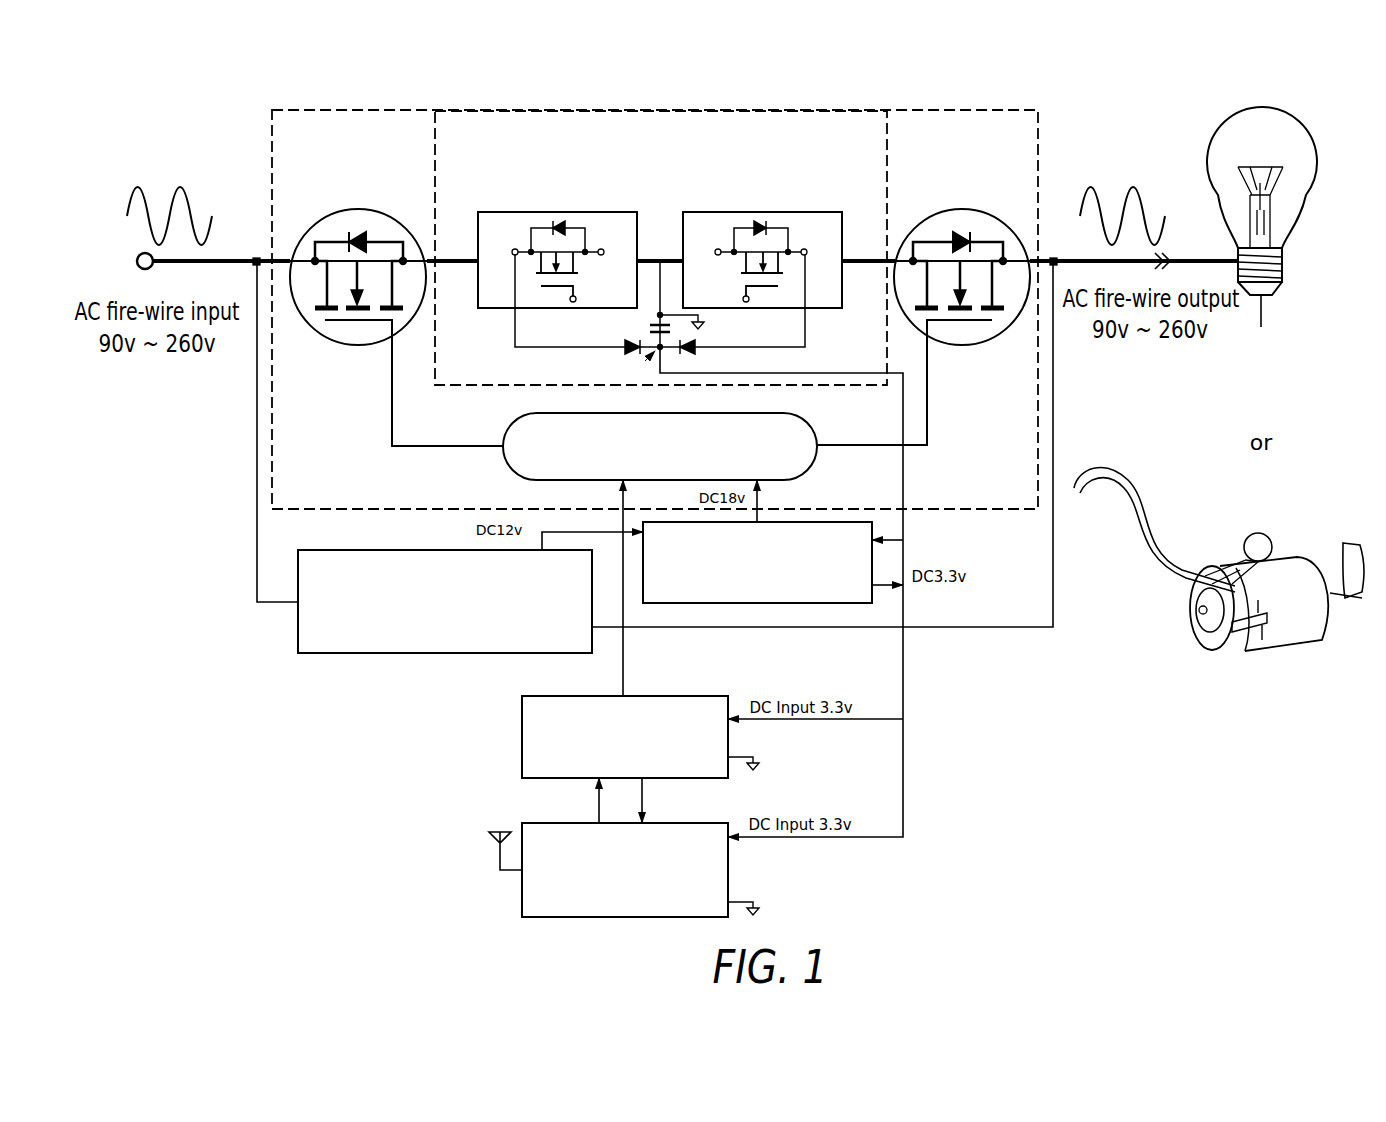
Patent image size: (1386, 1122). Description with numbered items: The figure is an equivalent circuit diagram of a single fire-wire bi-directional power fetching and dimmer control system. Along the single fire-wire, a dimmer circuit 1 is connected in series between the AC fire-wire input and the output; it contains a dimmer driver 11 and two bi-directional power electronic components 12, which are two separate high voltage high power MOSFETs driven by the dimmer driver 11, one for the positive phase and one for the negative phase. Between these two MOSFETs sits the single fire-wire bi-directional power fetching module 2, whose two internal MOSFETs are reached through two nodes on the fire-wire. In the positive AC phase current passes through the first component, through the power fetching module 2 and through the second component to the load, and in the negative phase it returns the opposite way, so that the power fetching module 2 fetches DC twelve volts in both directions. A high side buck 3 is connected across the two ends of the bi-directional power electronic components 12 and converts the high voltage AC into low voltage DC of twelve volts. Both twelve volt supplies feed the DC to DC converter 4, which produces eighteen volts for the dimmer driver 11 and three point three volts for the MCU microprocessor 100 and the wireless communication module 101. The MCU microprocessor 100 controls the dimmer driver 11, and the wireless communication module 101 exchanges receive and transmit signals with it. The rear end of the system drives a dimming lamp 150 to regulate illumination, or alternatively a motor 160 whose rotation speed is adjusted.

The dimmer circuit 1 is at (262, 457).
The single fire-wire bi-directional power fetching module 2 is at (480, 126).
The high side buck 3 is at (399, 654).
The DC to DC converter 4 is at (763, 604).
The dimmer driver 11 is at (799, 463).
The bi-directional power electronic component 12 is at (315, 241).
The MCU microprocessor 100 is at (522, 745).
The wireless communication module 101 is at (543, 823).
The dimming lamp 150 is at (1300, 136).
The motor 160 is at (1288, 560).